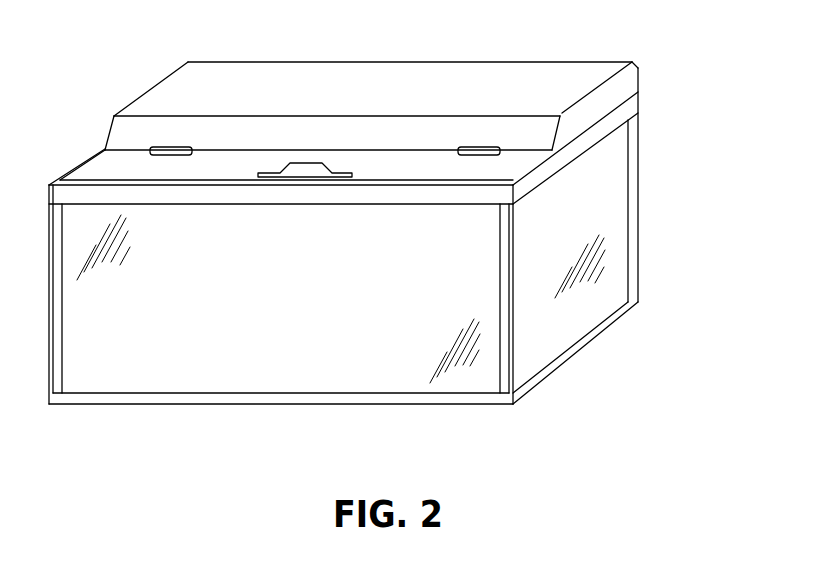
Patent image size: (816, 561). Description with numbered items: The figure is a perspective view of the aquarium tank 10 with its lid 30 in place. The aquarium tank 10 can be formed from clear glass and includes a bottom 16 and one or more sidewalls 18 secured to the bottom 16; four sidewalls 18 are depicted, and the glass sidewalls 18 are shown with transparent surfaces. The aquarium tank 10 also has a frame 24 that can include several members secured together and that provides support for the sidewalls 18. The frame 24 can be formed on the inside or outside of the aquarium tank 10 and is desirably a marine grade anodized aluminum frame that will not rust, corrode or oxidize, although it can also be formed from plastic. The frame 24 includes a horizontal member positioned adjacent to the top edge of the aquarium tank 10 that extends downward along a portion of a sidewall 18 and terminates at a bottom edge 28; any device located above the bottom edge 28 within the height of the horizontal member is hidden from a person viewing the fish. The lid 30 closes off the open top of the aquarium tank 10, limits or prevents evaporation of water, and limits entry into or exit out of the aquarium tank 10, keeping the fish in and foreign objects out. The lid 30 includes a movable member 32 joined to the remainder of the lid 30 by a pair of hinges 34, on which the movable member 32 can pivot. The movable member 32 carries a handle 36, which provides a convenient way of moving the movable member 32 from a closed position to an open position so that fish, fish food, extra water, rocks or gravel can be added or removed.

The aquarium tank 10 is at (692, 80).
The bottom 16 is at (410, 407).
The sidewall 18 is at (279, 311).
The frame 24 is at (393, 209).
The bottom edge 28 is at (262, 205).
The lid 30 is at (452, 82).
The movable member 32 is at (105, 165).
The hinge 34 is at (178, 146).
The handle 36 is at (316, 163).